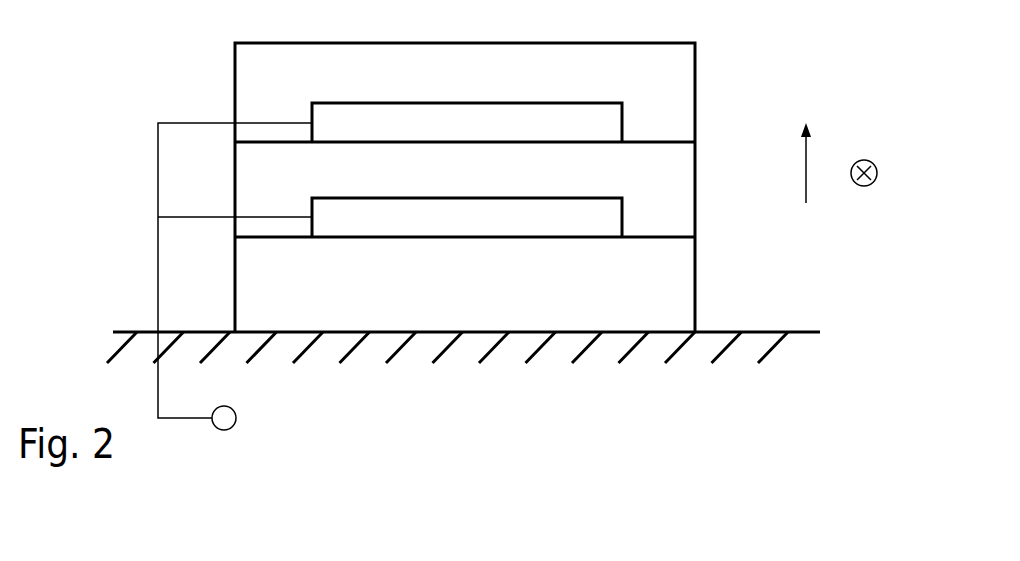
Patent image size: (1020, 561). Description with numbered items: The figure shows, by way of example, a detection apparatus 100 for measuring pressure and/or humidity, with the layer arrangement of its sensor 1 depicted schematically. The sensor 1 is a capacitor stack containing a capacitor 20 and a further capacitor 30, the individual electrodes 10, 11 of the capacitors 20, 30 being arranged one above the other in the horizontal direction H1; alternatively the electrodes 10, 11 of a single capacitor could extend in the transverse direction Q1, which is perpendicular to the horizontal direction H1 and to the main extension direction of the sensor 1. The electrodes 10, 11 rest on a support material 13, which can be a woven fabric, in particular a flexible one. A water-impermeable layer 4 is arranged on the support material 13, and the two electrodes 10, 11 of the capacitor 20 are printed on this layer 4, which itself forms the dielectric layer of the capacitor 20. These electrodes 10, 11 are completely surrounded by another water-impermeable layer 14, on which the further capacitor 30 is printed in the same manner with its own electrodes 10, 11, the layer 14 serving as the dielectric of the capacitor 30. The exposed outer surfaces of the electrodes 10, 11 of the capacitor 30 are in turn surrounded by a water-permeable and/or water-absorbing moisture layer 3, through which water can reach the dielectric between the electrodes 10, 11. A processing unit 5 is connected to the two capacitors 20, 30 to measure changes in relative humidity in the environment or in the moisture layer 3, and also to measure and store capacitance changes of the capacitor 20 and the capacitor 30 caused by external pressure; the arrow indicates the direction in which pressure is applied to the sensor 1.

The detection apparatus 100 is at (33, 150).
The sensor 1 is at (592, 210).
The moisture layer 3 is at (681, 80).
The water-impermeable layer 14 is at (681, 190).
The water-impermeable layer 4 is at (681, 277).
The electrode 10 is at (344, 113).
The electrode 11 is at (382, 208).
The capacitor 30 is at (511, 115).
The capacitor 20 is at (473, 222).
The processing unit 5 is at (236, 416).
The support material 13 is at (672, 335).
The transverse direction Q1 is at (821, 163).
The horizontal direction H1 is at (877, 173).